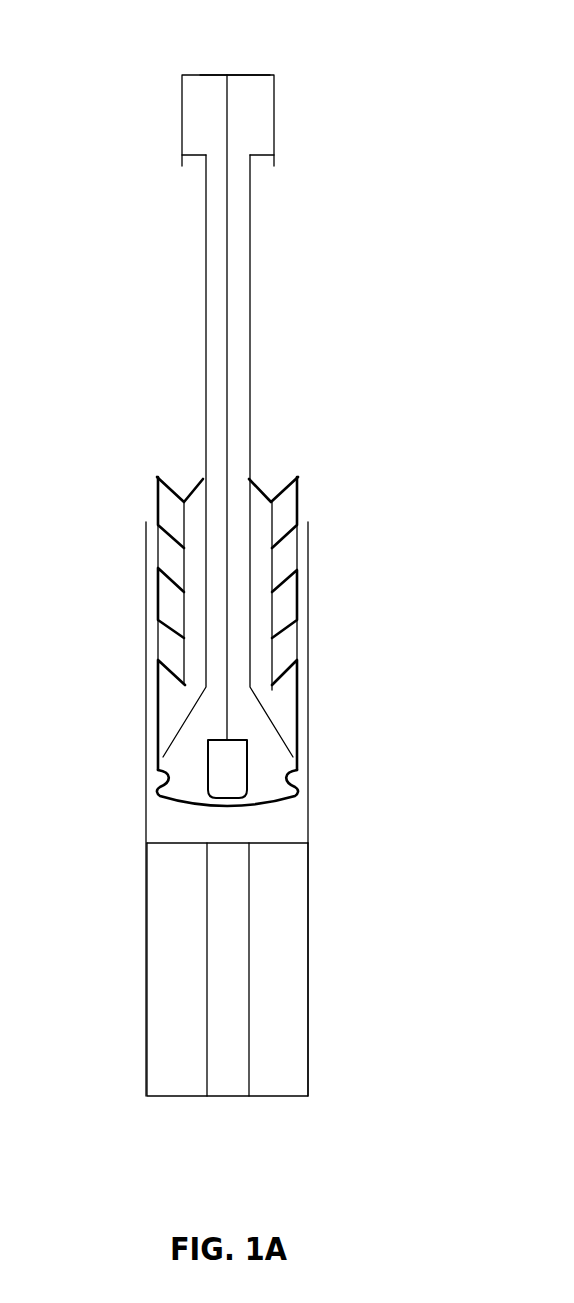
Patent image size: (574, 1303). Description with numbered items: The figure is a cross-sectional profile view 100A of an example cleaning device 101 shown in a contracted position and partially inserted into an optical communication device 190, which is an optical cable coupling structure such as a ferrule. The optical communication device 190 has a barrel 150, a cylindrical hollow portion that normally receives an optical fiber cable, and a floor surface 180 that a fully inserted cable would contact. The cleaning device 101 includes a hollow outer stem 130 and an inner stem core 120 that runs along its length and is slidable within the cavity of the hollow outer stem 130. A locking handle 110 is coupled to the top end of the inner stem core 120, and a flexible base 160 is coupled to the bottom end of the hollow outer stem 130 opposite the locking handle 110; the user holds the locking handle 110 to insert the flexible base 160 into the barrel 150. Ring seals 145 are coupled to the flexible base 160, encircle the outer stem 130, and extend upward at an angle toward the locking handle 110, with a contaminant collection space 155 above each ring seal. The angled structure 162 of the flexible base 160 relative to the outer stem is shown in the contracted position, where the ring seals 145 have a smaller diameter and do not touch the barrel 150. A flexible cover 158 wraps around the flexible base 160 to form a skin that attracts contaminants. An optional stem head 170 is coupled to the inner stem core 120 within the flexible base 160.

The cross-sectional profile view 100A is at (183, 31).
The cleaning device 101 is at (252, 75).
The locking handle 110 is at (274, 163).
The inner stem core 120 is at (242, 250).
The hollow outer stem 130 is at (250, 321).
The ring seals 145 is at (297, 504).
The barrel 150 is at (310, 637).
The contaminant collection space 155 is at (157, 640).
The flexible cover 158 is at (158, 685).
The flexible base 160 is at (274, 478).
The structure of the flexible base 162 is at (203, 482).
The stem head 170 is at (208, 759).
The floor surface 180 is at (312, 851).
The optical communication device 190 is at (312, 1100).